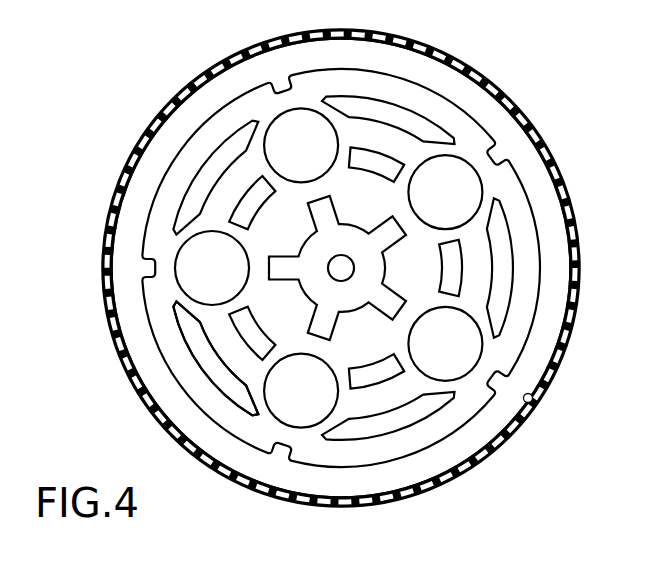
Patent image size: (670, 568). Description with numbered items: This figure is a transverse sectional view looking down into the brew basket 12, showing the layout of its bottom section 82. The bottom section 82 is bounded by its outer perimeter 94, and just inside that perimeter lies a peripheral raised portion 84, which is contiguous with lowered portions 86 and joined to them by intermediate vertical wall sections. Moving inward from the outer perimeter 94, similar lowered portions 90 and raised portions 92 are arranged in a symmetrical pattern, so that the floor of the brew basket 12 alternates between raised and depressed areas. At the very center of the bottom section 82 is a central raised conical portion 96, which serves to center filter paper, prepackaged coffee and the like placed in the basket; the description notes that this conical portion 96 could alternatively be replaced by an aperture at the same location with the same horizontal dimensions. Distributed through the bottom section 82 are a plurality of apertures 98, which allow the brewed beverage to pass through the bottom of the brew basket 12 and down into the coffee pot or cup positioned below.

The brew basket 12 is at (560, 325).
The bottom section 82 is at (493, 455).
The peripheral raised portion 84 is at (415, 467).
The lowered portions 86 is at (217, 370).
The lowered portions 90 is at (217, 330).
The raised portions 92 is at (246, 330).
The outer perimeter 94 is at (532, 400).
The central raised conical portion 96 is at (343, 265).
The apertures 98 is at (471, 170).